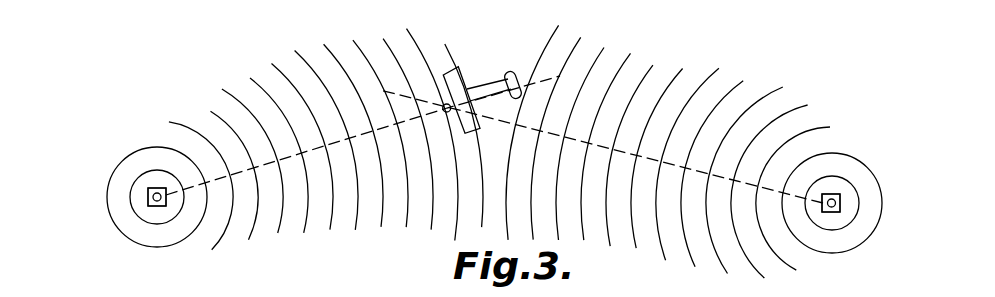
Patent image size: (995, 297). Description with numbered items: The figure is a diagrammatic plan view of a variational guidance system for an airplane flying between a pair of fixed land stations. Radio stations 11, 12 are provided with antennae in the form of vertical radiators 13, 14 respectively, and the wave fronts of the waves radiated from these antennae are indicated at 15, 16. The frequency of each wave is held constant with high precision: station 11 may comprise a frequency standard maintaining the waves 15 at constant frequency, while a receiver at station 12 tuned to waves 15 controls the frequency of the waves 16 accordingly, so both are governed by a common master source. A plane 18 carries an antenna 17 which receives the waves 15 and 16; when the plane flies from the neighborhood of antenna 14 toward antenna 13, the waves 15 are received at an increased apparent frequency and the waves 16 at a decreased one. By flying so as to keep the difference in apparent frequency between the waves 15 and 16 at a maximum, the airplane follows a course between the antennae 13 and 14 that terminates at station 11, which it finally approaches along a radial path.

The radio station 11 is at (158, 206).
The radio station 12 is at (834, 215).
The vertical radiator 13 is at (158, 188).
The vertical radiator 14 is at (833, 194).
The wave fronts 15 is at (211, 110).
The wave fronts 16 is at (756, 133).
The antenna 17 is at (446, 104).
The plane 18 is at (463, 70).